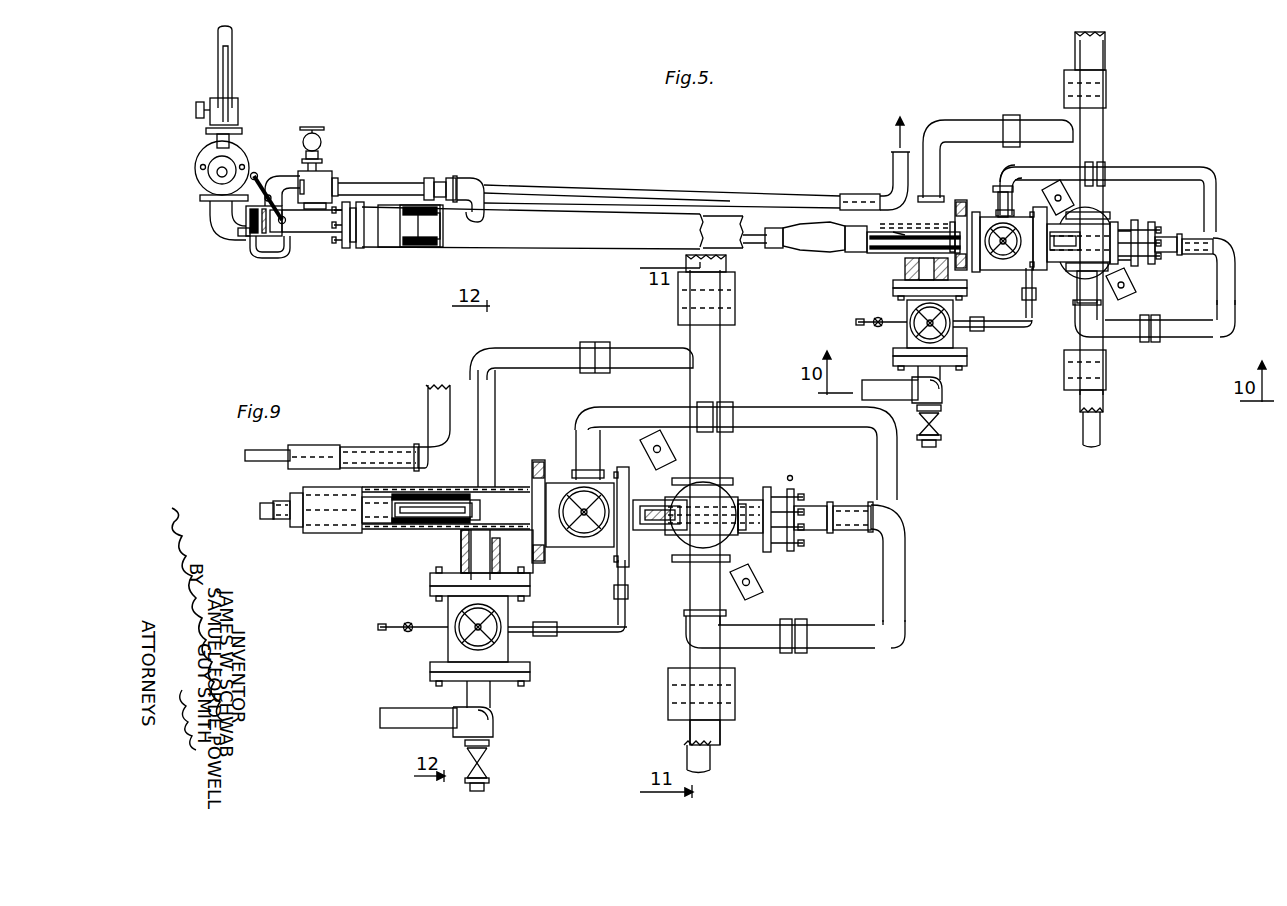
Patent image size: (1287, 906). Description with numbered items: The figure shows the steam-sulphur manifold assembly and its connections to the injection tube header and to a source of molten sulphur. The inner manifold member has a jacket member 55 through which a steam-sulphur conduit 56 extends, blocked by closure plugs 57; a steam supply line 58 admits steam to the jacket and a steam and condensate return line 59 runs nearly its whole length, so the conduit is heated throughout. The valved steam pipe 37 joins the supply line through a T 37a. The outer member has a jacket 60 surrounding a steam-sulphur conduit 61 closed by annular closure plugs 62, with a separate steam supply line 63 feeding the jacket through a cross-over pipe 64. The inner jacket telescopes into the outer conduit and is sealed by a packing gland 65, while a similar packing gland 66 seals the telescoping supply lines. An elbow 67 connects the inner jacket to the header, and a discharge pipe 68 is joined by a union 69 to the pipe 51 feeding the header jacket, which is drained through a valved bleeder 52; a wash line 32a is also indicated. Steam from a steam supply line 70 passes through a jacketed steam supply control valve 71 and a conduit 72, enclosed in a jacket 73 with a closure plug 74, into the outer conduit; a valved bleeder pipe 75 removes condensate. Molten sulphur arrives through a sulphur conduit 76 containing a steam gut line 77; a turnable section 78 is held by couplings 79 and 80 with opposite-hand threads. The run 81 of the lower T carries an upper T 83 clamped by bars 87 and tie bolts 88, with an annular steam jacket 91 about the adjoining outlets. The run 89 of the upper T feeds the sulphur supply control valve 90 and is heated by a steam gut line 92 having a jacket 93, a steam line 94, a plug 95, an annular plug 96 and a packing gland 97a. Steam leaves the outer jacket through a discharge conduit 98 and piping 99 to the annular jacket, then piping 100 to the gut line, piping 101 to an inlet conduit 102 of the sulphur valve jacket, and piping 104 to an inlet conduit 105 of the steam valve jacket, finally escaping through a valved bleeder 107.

In FIG. 5, the wash line 32a is at (231, 37).
In FIG. 5, the valved bleeder 52 is at (232, 77).
In FIG. 5, the pipe 51 is at (216, 186).
In FIG. 5, the elbow 67 is at (210, 213).
In FIG. 5, the union 69 is at (258, 176).
In FIG. 5, the steam supply line 58 is at (281, 179).
In FIG. 9, the steam supply line 58 is at (378, 455).
In FIG. 5, the closure plugs 57 is at (246, 224).
In FIG. 9, the closure plugs 57 is at (459, 510).
In FIG. 5, the steam-sulphur conduit 56 is at (246, 238).
In FIG. 9, the steam-sulphur conduit 56 is at (268, 503).
In FIG. 5, the steam and condensate return line 59 is at (250, 246).
In FIG. 9, the steam and condensate return line 59 is at (262, 513).
In FIG. 5, the discharge pipe 68 is at (282, 260).
In FIG. 5, the valved steam pipe 37 is at (322, 146).
In FIG. 5, the T 37a is at (322, 182).
In FIG. 5, the jacket member 55 is at (313, 224).
In FIG. 9, the jacket member 55 is at (280, 521).
In FIG. 5, the packing gland 65 is at (372, 235).
In FIG. 5, the annular closure plugs 62 is at (403, 246).
In FIG. 9, the annular closure plugs 62 is at (512, 476).
In FIG. 5, the steam-sulphur conduit 61 is at (437, 240).
In FIG. 9, the steam-sulphur conduit 61 is at (297, 528).
In FIG. 5, the packing gland 66 is at (437, 180).
In FIG. 5, the cross-over pipe 64 is at (479, 190).
In FIG. 5, the steam supply line 63 is at (623, 196).
In FIG. 9, the steam supply line 63 is at (328, 450).
In FIG. 5, the jacket 60 is at (560, 238).
In FIG. 9, the jacket 60 is at (348, 534).
In FIG. 5, the jacket 73 is at (915, 280).
In FIG. 9, the jacket 73 is at (528, 576).
In FIG. 5, the conduit 72 is at (958, 285).
In FIG. 9, the conduit 72 is at (470, 560).
In FIG. 5, the steam supply control valve 71 is at (905, 335).
In FIG. 9, the steam supply control valve 71 is at (447, 646).
In FIG. 5, the closure plug 74 is at (930, 359).
In FIG. 9, the closure plug 74 is at (510, 601).
In FIG. 5, the steam supply line 70 is at (880, 382).
In FIG. 9, the steam supply line 70 is at (400, 710).
In FIG. 5, the valved bleeder pipe 75 is at (942, 434).
In FIG. 9, the valved bleeder pipe 75 is at (490, 746).
In FIG. 5, the valved bleeder 107 is at (870, 320).
In FIG. 9, the valved bleeder 107 is at (397, 622).
In FIG. 5, the inlet conduit 105 is at (975, 322).
In FIG. 9, the inlet conduit 105 is at (533, 634).
In FIG. 5, the piping 104 is at (1015, 328).
In FIG. 9, the piping 104 is at (624, 608).
In FIG. 5, the sulphur supply control valve 90 is at (1010, 264).
In FIG. 9, the sulphur supply control valve 90 is at (600, 547).
In FIG. 5, the plug 95 is at (1008, 218).
In FIG. 9, the plug 95 is at (652, 533).
In FIG. 5, the run of the upper T 89 is at (1060, 268).
In FIG. 9, the run of the upper T 89 is at (632, 558).
In FIG. 5, the inlet conduit 102 is at (1000, 195).
In FIG. 9, the inlet conduit 102 is at (578, 452).
In FIG. 5, the run of the lower T 81 is at (1106, 222).
In FIG. 9, the run of the lower T 81 is at (722, 479).
In FIG. 5, the upper T 83 is at (1110, 217).
In FIG. 9, the upper T 83 is at (733, 491).
In FIG. 5, the turnable section 78 is at (1106, 140).
In FIG. 9, the turnable section 78 is at (722, 360).
In FIG. 5, the coupling 80 is at (1108, 92).
In FIG. 9, the coupling 80 is at (736, 300).
In FIG. 5, the coupling 79 is at (1106, 367).
In FIG. 9, the coupling 79 is at (736, 690).
In FIG. 5, the sulphur conduit 76 is at (1103, 397).
In FIG. 9, the sulphur conduit 76 is at (690, 726).
In FIG. 5, the steam gut line 77 is at (1100, 444).
In FIG. 9, the steam gut line 77 is at (688, 745).
In FIG. 5, the piping 99 is at (992, 124).
In FIG. 9, the piping 99 is at (628, 348).
In FIG. 5, the piping 101 is at (1161, 168).
In FIG. 9, the piping 101 is at (765, 408).
In FIG. 5, the packing gland 97a is at (1153, 250).
In FIG. 9, the packing gland 97a is at (790, 487).
In FIG. 5, the steam gut line 92 is at (1170, 252).
In FIG. 9, the steam gut line 92 is at (818, 506).
In FIG. 5, the jacket 93 is at (1185, 236).
In FIG. 9, the jacket 93 is at (832, 535).
In FIG. 5, the steam line 94 is at (1203, 255).
In FIG. 9, the steam line 94 is at (853, 533).
In FIG. 5, the annular plug 96 is at (1225, 252).
In FIG. 9, the annular plug 96 is at (880, 510).
In FIG. 5, the piping 100 is at (1185, 338).
In FIG. 9, the piping 100 is at (835, 648).
In FIG. 5, the annular steam jacket 91 is at (1100, 290).
In FIG. 9, the annular steam jacket 91 is at (742, 540).
In FIG. 5, the bars 87 is at (1110, 276).
In FIG. 9, the bars 87 is at (727, 562).
In FIG. 5, the tie bolts 88 is at (1126, 294).
In FIG. 9, the tie bolts 88 is at (652, 446).
In FIG. 9, the discharge conduit 98 is at (470, 548).